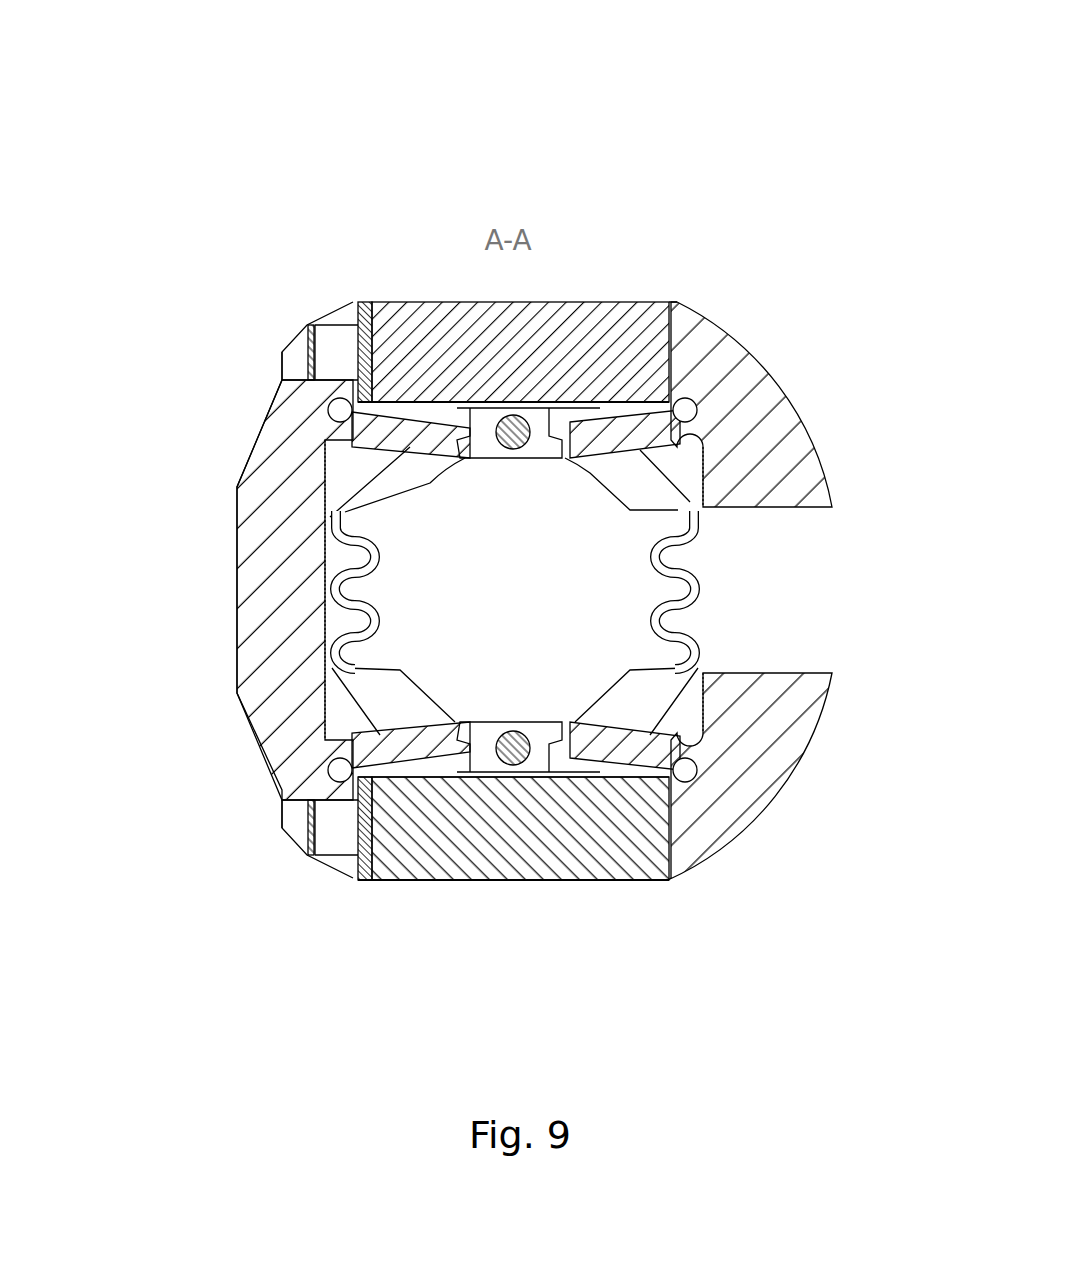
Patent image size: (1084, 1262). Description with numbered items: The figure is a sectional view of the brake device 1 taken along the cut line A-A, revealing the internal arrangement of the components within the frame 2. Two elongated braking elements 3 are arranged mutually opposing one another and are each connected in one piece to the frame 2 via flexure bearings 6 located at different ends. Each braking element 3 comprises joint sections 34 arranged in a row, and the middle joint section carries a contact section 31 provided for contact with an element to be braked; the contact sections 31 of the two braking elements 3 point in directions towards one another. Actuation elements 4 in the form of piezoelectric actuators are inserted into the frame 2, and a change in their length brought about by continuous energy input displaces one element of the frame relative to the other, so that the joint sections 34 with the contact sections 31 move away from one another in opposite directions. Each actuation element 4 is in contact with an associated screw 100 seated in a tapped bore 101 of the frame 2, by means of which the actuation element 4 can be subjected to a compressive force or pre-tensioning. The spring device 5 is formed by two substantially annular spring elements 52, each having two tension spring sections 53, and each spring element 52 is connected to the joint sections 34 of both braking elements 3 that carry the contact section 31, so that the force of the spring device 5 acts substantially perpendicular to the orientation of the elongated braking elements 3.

The brake device 1 is at (498, 515).
The frame 2 is at (740, 382).
The braking element 3 is at (583, 589).
The actuation element 4 is at (588, 318).
The spring device 5 is at (529, 555).
The flexure bearing 6 is at (340, 753).
The contact section 31 is at (514, 710).
The joint sections 34 is at (647, 433).
The spring element 52 is at (643, 481).
The tension spring section 53 is at (722, 587).
The screw 100 is at (310, 346).
The tapped bore 101 is at (323, 362).